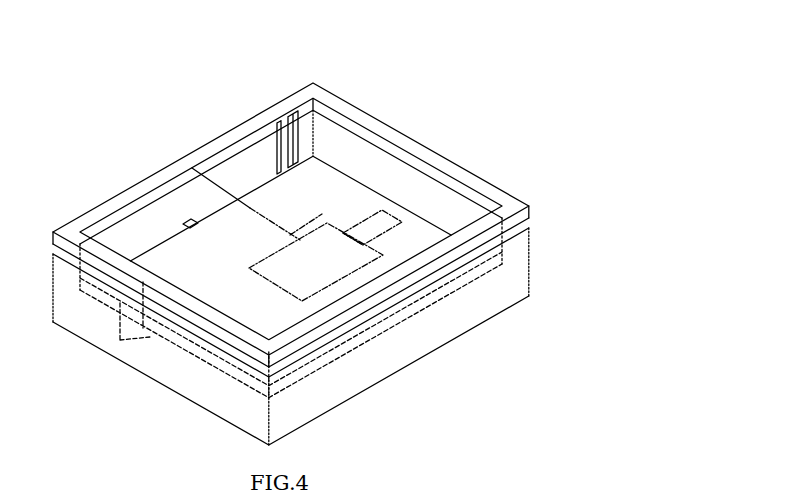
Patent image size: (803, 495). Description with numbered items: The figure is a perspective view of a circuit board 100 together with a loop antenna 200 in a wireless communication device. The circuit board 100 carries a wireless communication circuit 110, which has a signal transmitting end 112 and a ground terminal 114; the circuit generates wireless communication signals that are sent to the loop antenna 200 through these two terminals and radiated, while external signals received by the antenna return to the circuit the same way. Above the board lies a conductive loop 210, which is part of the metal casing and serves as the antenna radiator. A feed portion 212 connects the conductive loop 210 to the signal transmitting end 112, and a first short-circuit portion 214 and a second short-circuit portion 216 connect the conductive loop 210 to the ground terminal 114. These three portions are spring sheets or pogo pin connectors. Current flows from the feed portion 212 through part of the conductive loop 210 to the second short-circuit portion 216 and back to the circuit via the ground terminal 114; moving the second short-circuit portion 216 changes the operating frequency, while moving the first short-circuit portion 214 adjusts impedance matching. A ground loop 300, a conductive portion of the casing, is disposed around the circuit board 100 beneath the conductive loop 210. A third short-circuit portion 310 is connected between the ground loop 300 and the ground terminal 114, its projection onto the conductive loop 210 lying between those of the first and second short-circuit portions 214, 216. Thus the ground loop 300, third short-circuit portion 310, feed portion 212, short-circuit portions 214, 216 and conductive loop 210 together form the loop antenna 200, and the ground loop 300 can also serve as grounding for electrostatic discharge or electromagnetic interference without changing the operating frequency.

The loop antenna 200 is at (57, 202).
The circuit board 100 is at (153, 240).
The wireless communication circuit 110 is at (275, 250).
The signal transmitting end 112 is at (364, 244).
The ground terminal 114 is at (250, 265).
The conductive loop 210 is at (429, 157).
The feed portion 212 is at (293, 123).
The first short-circuit portion 214 is at (276, 124).
The second short-circuit portion 216 is at (122, 313).
The ground loop 300 is at (157, 363).
The third short-circuit portion 310 is at (186, 219).